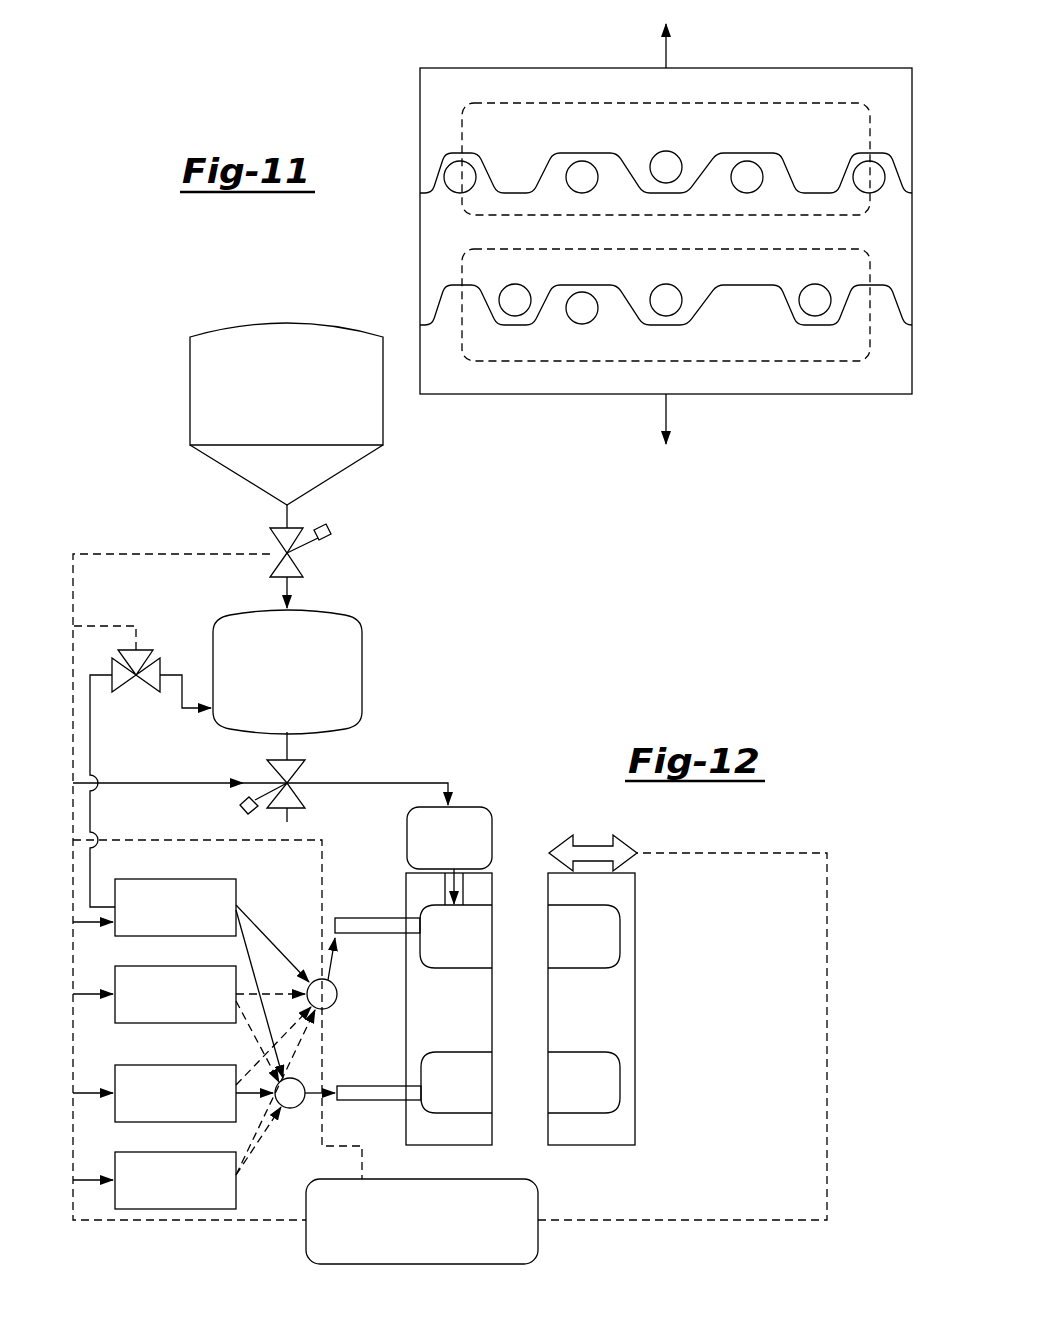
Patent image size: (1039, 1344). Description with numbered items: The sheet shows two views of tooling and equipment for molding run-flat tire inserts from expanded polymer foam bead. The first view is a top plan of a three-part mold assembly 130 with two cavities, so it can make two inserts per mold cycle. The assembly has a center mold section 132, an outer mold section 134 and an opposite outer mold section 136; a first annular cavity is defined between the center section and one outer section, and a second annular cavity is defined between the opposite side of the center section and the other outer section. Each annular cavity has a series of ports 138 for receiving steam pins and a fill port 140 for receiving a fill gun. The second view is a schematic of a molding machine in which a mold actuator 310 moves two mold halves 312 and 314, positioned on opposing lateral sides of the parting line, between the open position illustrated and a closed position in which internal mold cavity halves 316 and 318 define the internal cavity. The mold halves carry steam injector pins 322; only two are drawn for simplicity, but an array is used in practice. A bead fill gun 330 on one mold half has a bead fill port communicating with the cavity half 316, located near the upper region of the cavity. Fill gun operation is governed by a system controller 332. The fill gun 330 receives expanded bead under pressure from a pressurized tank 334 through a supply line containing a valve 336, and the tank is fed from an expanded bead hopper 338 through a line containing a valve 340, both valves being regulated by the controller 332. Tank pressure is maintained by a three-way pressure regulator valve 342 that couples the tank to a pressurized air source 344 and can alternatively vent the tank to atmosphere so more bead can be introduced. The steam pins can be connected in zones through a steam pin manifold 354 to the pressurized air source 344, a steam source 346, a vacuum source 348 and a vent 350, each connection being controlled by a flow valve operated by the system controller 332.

In FIG. 11, the three-part mold assembly 130 is at (748, 52).
In FIG. 11, the center mold section 132 is at (420, 103).
In FIG. 11, the outer mold section 134 is at (879, 68).
In FIG. 11, the opposite outer mold section 136 is at (872, 394).
In FIG. 11, the ports 138 is at (873, 174).
In FIG. 11, the fill port 140 is at (665, 151).
In FIG. 12, the mold actuator 310 is at (594, 845).
In FIG. 12, the mold half 312 is at (441, 1145).
In FIG. 12, the mold half 314 is at (590, 1145).
In FIG. 12, the internal mold cavity half 316 is at (481, 1097).
In FIG. 12, the internal mold cavity half 318 is at (601, 1097).
In FIG. 12, the steam injector pin 322 is at (375, 918).
In FIG. 12, the bead fill gun 330 is at (468, 856).
In FIG. 12, the system controller 332 is at (307, 1240).
In FIG. 12, the pressurized tank 334 is at (362, 660).
In FIG. 12, the valve 336 is at (300, 773).
In FIG. 12, the expanded bead hopper 338 is at (190, 392).
In FIG. 12, the valve 340 is at (281, 556).
In FIG. 12, the three-way pressure regulator valve 342 is at (126, 687).
In FIG. 12, the pressurized air source 344 is at (115, 893).
In FIG. 12, the steam source 346 is at (115, 979).
In FIG. 12, the vacuum source 348 is at (115, 1077).
In FIG. 12, the vent 350 is at (115, 1165).
In FIG. 12, the steam pin manifold 354 is at (288, 1110).